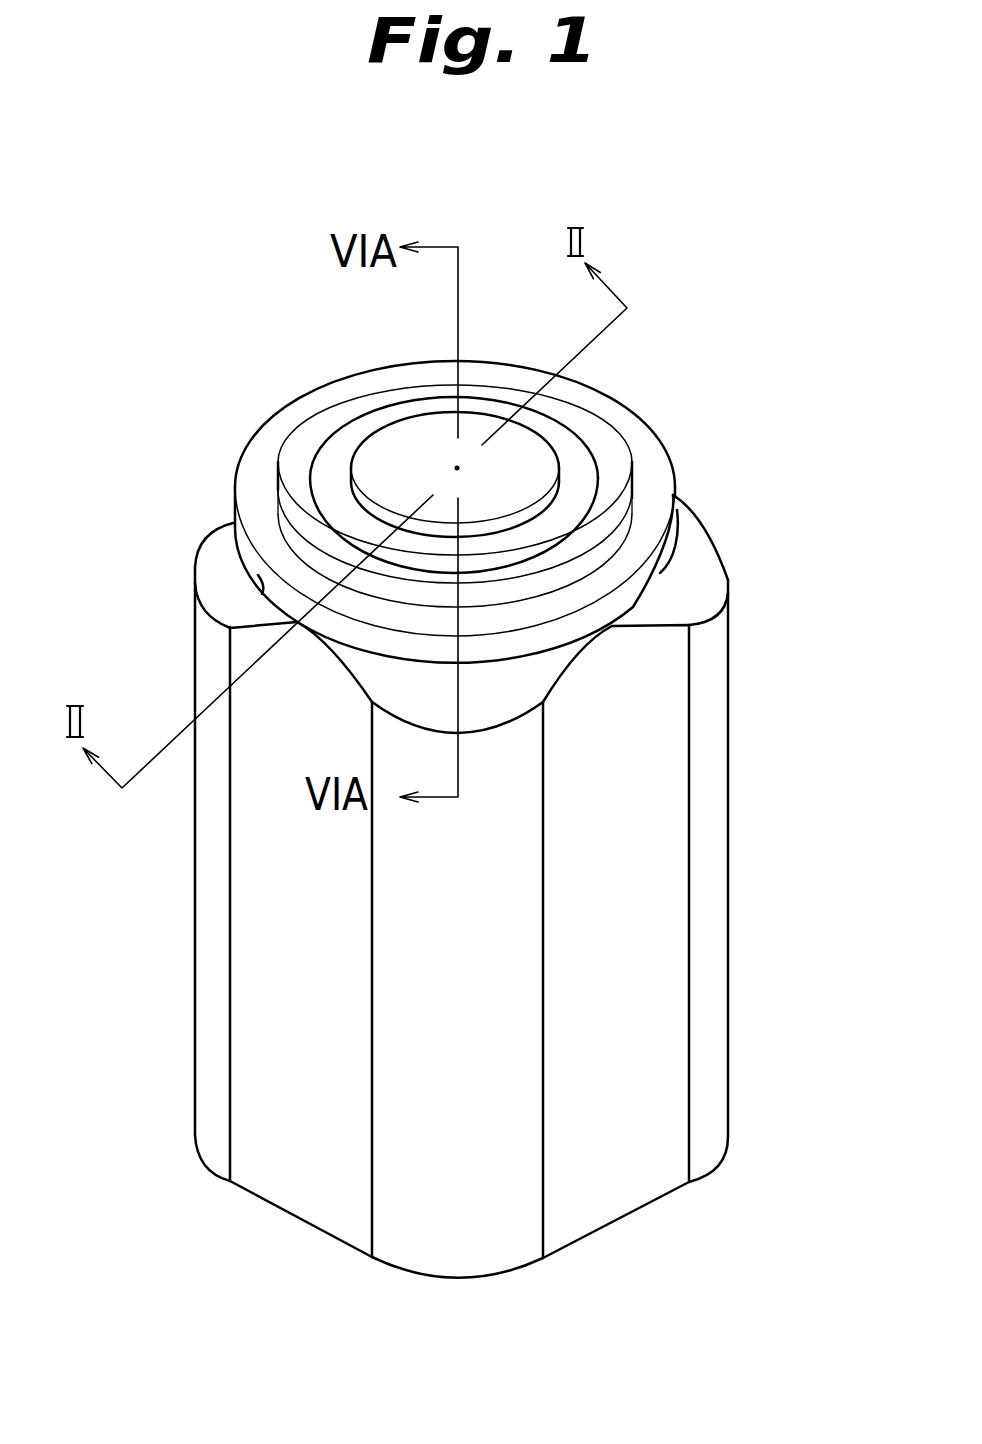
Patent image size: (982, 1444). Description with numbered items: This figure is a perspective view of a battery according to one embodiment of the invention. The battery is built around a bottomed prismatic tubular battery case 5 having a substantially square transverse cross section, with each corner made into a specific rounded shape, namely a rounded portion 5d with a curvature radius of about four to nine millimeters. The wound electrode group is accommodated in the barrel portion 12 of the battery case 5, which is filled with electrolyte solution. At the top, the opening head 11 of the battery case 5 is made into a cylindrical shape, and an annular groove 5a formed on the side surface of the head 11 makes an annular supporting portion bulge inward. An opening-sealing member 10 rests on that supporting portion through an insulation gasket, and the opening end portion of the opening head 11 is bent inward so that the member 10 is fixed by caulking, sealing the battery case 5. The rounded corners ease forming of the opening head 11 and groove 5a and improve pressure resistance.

The battery case 5 is at (748, 908).
The annular groove 5a is at (665, 567).
The rounded portion 5d is at (469, 1186).
The opening-sealing member 10 is at (565, 445).
The opening head 11 is at (672, 460).
The barrel portion 12 is at (645, 822).